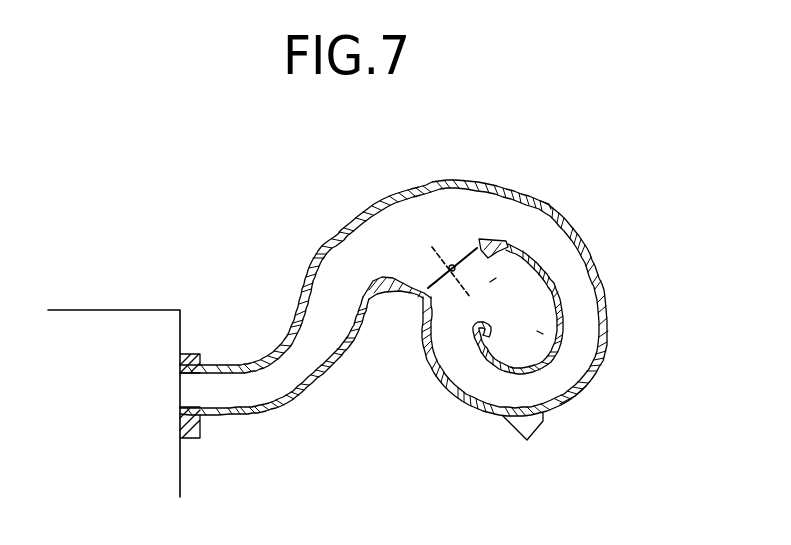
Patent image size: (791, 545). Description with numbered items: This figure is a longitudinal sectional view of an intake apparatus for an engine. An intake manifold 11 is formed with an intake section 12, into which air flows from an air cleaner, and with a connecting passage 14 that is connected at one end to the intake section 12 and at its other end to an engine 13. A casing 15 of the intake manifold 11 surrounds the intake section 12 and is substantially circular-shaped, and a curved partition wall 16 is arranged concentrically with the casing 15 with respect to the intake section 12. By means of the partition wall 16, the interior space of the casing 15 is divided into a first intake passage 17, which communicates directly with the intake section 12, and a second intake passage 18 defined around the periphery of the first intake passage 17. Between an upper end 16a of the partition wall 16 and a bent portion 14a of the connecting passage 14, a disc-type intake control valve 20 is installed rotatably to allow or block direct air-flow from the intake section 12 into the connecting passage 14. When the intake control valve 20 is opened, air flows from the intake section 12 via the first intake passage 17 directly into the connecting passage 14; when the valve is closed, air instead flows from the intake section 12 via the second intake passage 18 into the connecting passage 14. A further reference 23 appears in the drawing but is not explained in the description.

The intake manifold 11 is at (588, 242).
The intake section 12 is at (540, 332).
The engine 13 is at (152, 318).
The connecting passage 14 is at (290, 387).
The bent portion 14a is at (390, 293).
The casing 15 is at (587, 383).
The curved partition wall 16 is at (552, 282).
The upper end 16a is at (489, 241).
The first intake passage 17 is at (492, 282).
The second intake passage 18 is at (547, 390).
The disc-type intake control valve 20 is at (437, 283).
The cross member 23 is at (452, 260).